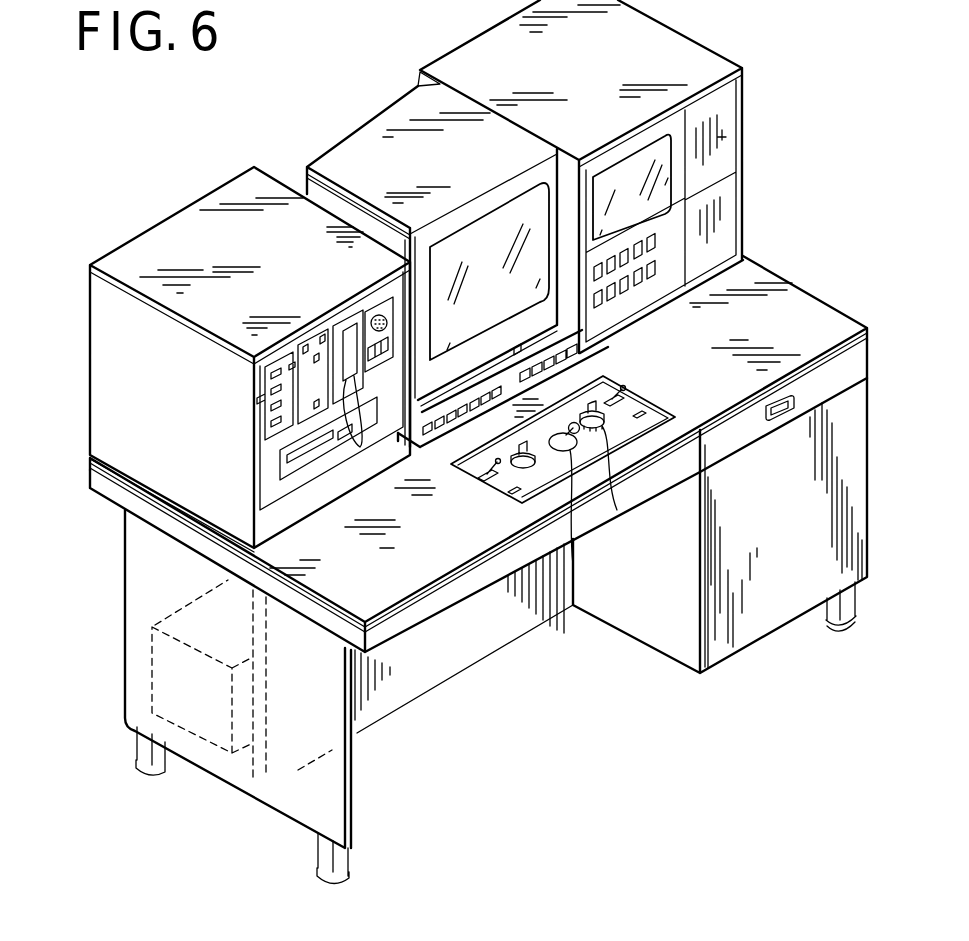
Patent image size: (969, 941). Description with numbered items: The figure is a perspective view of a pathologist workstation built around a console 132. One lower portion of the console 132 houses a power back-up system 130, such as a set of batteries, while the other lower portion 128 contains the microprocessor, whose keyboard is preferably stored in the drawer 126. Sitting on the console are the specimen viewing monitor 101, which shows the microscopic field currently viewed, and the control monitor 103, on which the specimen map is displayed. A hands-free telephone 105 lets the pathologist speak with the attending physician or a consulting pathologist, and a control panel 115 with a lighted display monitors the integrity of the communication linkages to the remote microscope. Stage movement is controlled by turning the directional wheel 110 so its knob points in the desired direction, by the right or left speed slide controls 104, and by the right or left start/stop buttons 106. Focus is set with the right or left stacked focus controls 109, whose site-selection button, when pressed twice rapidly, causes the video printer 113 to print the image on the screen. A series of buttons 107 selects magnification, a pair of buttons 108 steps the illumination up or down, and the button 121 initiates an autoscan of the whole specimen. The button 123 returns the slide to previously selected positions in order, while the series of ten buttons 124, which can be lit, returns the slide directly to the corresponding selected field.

The specimen viewing monitor 101 is at (421, 72).
The control monitor 103 is at (622, 175).
The speed slide controls 104 is at (482, 478).
The telephone 105 is at (347, 325).
The start/stop buttons 106 is at (511, 494).
The series of buttons 107 is at (468, 468).
The pair of buttons 108 is at (516, 348).
The stacked focus controls 109 is at (618, 515).
The directional wheel 110 is at (578, 567).
The video printer 113 is at (292, 453).
The control panel 115 is at (270, 388).
The button 121 is at (600, 367).
The button 123 is at (600, 341).
The series of ten buttons 124 is at (660, 263).
The drawer 126 is at (833, 365).
The lower portion 128 is at (785, 586).
The power back-up system 130 is at (173, 673).
The console 132 is at (232, 551).